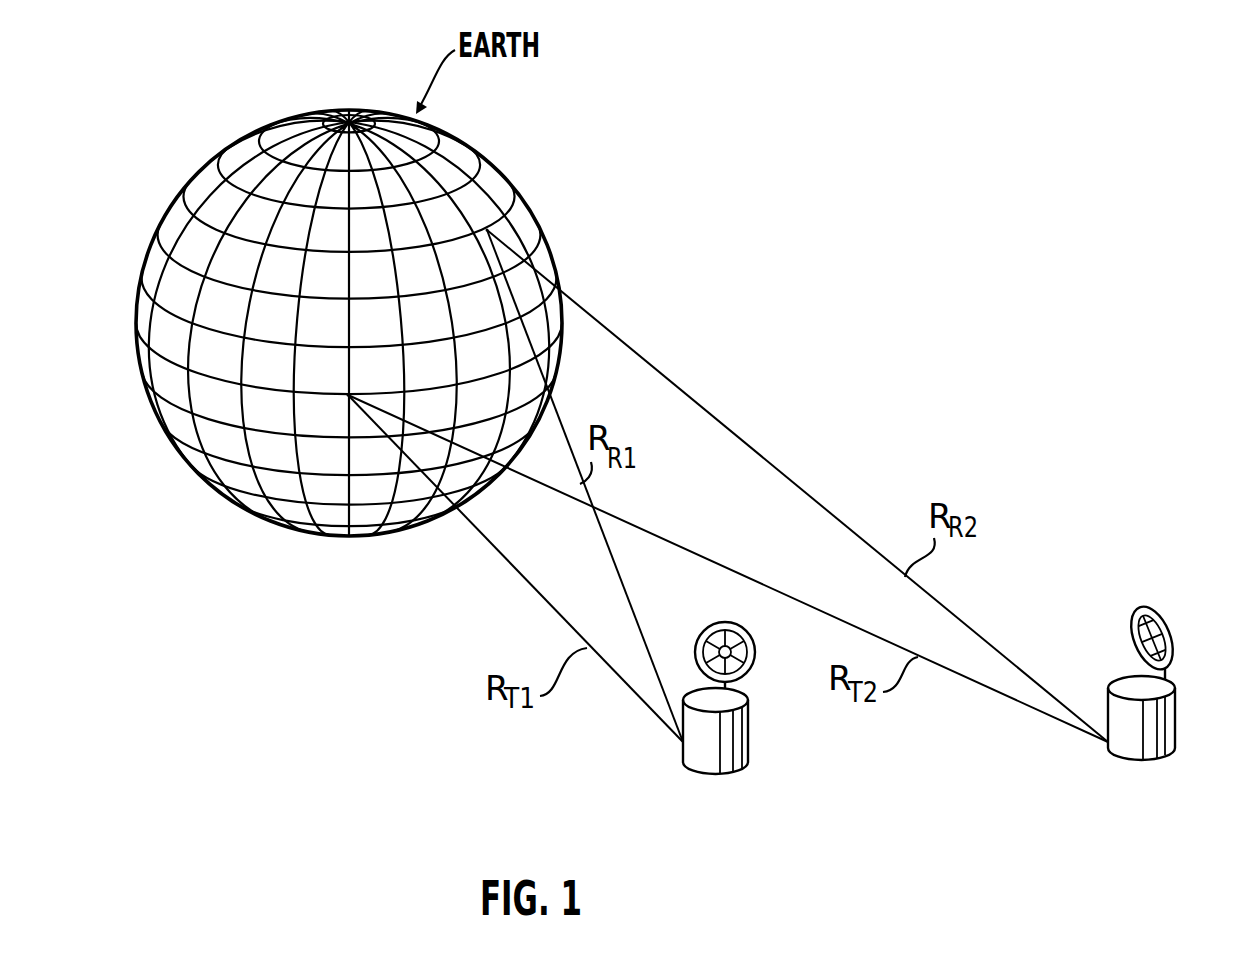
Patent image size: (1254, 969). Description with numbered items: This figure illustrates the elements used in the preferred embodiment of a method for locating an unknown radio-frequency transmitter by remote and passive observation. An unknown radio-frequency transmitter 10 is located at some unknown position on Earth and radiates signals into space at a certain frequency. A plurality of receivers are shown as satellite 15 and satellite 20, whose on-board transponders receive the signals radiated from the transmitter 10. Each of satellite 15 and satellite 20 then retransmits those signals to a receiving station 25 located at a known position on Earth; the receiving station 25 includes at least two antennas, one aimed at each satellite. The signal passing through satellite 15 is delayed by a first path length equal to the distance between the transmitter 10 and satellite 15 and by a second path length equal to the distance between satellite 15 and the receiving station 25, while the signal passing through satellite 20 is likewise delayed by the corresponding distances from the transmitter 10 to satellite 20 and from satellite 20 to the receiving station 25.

The unknown radio-frequency transmitter 10 is at (345, 388).
The satellite 15 is at (725, 776).
The satellite 20 is at (1163, 760).
The receiving station 25 is at (500, 229).